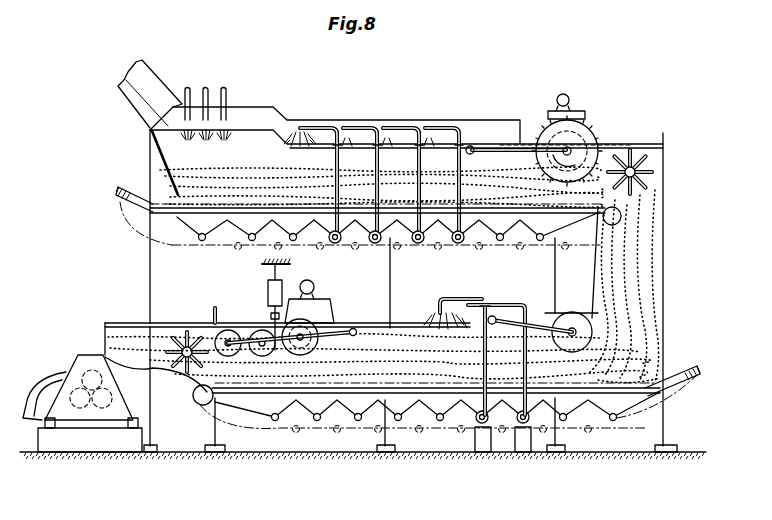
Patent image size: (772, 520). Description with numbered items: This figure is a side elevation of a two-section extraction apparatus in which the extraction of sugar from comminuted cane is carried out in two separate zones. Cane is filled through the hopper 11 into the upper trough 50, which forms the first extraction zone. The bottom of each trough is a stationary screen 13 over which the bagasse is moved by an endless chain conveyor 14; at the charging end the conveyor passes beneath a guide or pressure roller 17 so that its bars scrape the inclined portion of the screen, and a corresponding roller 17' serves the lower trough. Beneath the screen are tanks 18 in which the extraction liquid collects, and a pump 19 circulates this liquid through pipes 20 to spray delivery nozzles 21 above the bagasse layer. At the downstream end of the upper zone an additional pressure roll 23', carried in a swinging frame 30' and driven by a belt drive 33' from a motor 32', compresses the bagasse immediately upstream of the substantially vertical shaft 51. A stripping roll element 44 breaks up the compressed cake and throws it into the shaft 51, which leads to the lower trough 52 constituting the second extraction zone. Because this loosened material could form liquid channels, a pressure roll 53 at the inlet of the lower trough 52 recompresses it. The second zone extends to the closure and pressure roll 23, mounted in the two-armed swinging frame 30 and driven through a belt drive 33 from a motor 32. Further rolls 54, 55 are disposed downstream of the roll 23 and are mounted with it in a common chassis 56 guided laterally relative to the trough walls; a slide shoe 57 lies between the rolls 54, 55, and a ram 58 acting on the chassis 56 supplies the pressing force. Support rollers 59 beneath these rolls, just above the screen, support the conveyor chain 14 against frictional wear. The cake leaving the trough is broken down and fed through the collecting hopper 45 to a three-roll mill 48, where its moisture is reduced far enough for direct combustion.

The hopper 11 is at (150, 92).
The screen 13 is at (188, 212).
The endless chain conveyor 14 is at (412, 248).
The guide or pressure roller 17 is at (144, 202).
The guide or pressure roller 17' is at (660, 377).
The tank 18 is at (425, 240).
The pump 19 is at (460, 242).
The pipe 20 is at (465, 194).
The spray delivery nozzle 21 is at (297, 141).
The pressure roll 23 is at (327, 316).
The additional pressure roll 23' is at (586, 148).
The two-armed swinging frame 30 is at (301, 323).
The two-armed swinging frame 30' is at (548, 117).
The motor 32 is at (313, 288).
The motor 32' is at (566, 87).
The belt drive 33 is at (317, 315).
The belt drive 33' is at (581, 136).
The stripping roll element 44 is at (656, 169).
The collecting hopper 45 is at (120, 336).
The three-roll mill 48 is at (92, 422).
The upper trough 50 is at (360, 127).
The vertical shaft 51 is at (654, 268).
The lower trough 52 is at (385, 325).
The pressure roll 53 is at (555, 318).
The roll 54 is at (254, 332).
The roll 55 is at (231, 330).
The common chassis 56 is at (221, 337).
The slide shoe 57 is at (250, 348).
The ram 58 is at (270, 287).
The support rollers 59 is at (345, 386).